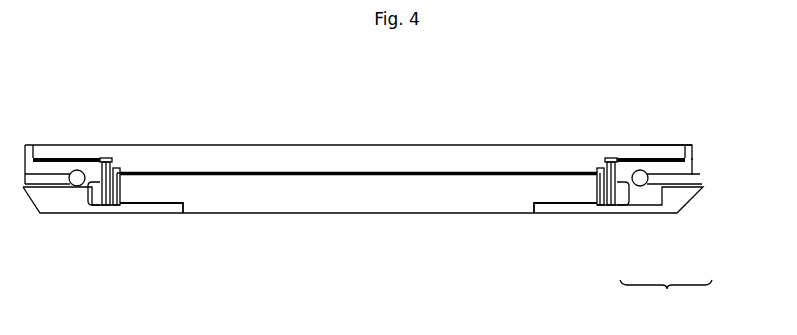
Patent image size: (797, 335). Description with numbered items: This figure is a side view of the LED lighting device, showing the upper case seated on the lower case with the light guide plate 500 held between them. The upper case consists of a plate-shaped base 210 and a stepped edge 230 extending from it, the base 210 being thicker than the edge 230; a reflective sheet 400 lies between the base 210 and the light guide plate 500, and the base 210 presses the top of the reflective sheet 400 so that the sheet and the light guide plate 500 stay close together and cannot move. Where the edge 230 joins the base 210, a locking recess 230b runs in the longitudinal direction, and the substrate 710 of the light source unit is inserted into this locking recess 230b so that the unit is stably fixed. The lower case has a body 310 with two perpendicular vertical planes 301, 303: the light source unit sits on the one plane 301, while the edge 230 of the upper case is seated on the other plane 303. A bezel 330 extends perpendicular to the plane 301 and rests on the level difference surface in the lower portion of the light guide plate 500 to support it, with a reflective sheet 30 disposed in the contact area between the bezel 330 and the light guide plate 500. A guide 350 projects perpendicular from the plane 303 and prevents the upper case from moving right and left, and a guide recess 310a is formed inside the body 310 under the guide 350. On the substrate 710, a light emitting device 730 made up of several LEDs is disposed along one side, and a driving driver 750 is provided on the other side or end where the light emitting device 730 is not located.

The base 210 is at (440, 152).
The edge 230 is at (662, 145).
The locking recess 230b is at (612, 157).
The guide 350 is at (694, 153).
The body 310 is at (666, 298).
The guide recess 310a is at (676, 179).
The vertical plane 301 is at (636, 190).
The vertical plane 303 is at (655, 185).
The reflective sheet 400 is at (262, 171).
The light guide plate 500 is at (346, 200).
The reflective sheet 30 is at (160, 205).
The bezel 330 is at (563, 213).
The substrate 710 is at (112, 205).
The light emitting device 730 is at (120, 205).
The driving driver 750 is at (95, 205).